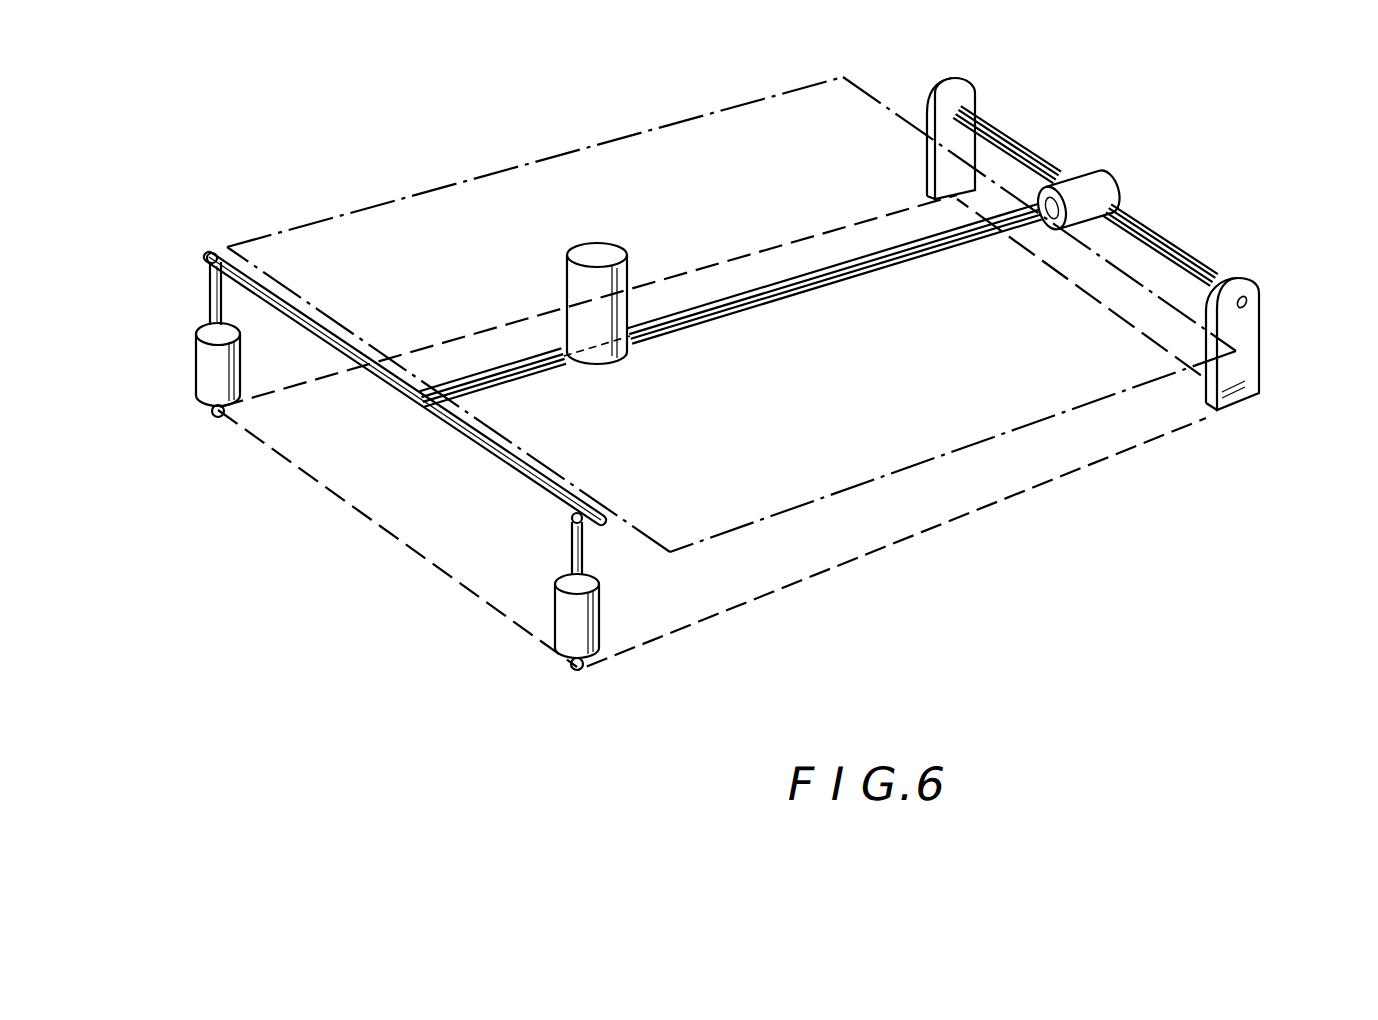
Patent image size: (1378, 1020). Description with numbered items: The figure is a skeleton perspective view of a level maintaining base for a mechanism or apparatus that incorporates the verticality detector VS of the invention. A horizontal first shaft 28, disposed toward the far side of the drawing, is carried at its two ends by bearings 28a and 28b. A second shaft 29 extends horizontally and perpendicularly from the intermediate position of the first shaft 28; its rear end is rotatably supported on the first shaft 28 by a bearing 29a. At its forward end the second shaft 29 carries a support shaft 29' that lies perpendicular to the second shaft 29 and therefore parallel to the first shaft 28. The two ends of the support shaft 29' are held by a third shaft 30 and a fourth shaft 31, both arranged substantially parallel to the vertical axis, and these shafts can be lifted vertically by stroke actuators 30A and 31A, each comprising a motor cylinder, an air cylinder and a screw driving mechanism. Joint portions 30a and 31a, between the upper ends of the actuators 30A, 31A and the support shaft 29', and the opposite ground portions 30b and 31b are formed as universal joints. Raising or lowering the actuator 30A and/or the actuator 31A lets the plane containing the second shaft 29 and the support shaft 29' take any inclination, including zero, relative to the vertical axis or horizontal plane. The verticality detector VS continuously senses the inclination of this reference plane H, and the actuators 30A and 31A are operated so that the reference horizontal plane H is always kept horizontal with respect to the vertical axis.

The reference horizontal plane H is at (427, 187).
The verticality detector VS is at (597, 255).
The first shaft 28 is at (1183, 258).
The bearing 28a is at (975, 92).
The bearing 28b is at (1253, 290).
The second shaft 29 is at (731, 214).
The support shaft 29' is at (405, 425).
The bearing 29a is at (1113, 180).
The third shaft 30 is at (584, 560).
The joint portion 30a is at (572, 522).
The stroke actuator 30A is at (563, 630).
The ground portion 30b is at (578, 671).
The fourth shaft 31 is at (211, 312).
The joint portion 31a is at (210, 264).
The stroke actuator 31A is at (206, 377).
The ground portion 31b is at (218, 418).